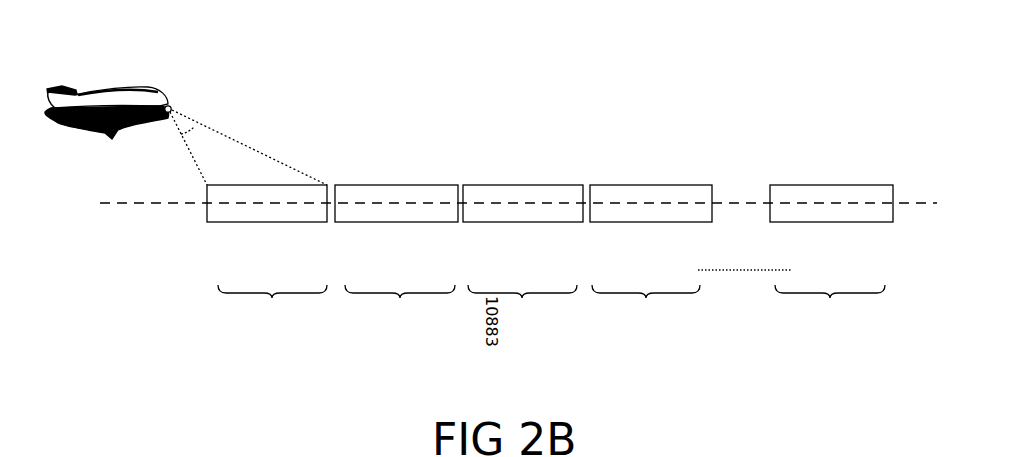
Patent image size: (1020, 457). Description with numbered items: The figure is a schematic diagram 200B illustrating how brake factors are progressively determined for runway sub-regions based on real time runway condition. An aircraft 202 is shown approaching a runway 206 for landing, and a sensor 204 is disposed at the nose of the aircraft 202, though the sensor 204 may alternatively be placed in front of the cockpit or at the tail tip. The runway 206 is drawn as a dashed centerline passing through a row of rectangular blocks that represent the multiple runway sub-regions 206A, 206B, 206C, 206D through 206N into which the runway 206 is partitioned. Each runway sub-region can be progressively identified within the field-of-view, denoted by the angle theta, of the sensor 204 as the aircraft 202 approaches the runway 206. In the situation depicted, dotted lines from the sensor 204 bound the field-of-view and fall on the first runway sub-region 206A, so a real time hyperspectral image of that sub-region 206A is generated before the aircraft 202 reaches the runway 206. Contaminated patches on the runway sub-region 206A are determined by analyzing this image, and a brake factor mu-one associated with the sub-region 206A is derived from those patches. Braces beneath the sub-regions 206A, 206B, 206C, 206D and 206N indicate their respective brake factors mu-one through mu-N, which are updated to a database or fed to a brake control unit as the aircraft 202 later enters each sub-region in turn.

The aircraft 202 is at (146, 92).
The sensor 204 is at (174, 103).
The runway 206 is at (900, 203).
The runway sub-region 206A is at (268, 222).
The runway sub-region 206B is at (395, 222).
The runway sub-region 206C is at (520, 222).
The runway sub-region 206D is at (645, 222).
The runway sub-region 206N is at (835, 222).
The system 200B is at (597, 351).